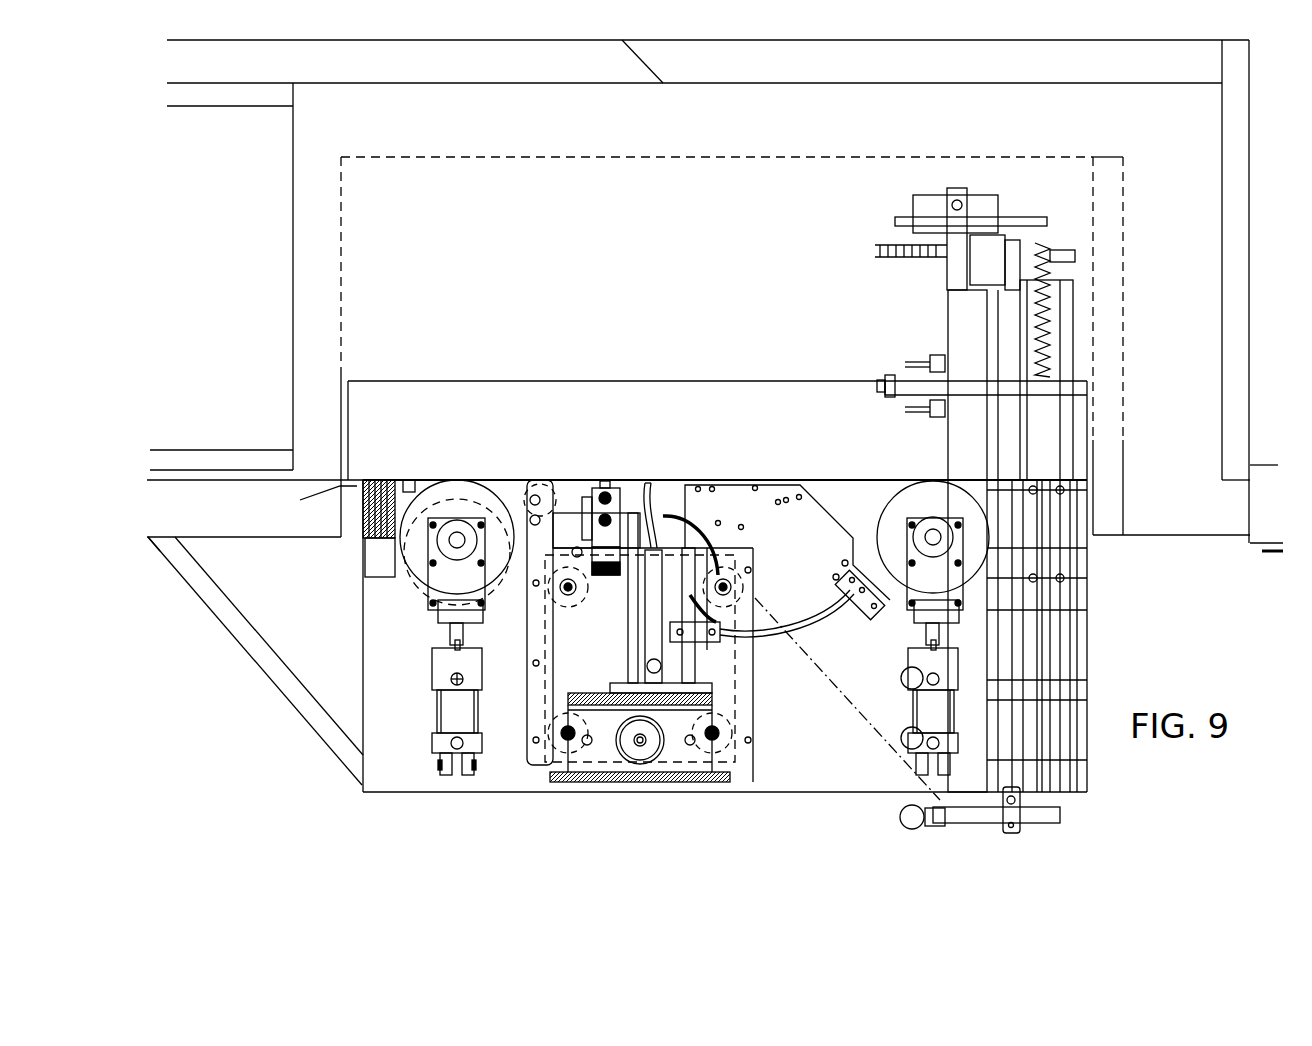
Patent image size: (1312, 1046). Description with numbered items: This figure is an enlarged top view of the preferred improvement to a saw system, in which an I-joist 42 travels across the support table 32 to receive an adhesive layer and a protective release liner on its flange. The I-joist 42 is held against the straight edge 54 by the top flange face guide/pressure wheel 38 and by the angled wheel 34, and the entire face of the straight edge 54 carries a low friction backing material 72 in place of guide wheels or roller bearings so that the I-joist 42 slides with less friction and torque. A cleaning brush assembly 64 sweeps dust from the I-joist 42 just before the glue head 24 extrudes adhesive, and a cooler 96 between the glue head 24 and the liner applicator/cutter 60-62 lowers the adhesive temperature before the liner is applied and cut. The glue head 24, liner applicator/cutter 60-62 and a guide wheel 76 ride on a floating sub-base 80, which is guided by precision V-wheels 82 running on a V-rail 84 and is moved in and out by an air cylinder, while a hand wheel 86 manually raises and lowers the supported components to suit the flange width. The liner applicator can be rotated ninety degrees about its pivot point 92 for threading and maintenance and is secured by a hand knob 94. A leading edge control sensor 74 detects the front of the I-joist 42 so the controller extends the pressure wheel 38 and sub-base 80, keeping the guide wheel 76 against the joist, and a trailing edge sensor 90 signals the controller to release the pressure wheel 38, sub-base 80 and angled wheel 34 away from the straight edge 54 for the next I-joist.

The low friction backing material 72 is at (790, 86).
The straight edge 54 is at (1177, 72).
The I-joist 42 is at (202, 427).
The cleaning brush assembly 64 is at (379, 477).
The leading edge control sensor 74 is at (408, 478).
The top flange face guide/pressure wheel 38 is at (463, 492).
The guide wheel 76 is at (541, 492).
The glue head 24 is at (615, 487).
The cooler 96 is at (658, 561).
The liner applicator/cutter 60-62 is at (738, 501).
The angled wheel 34 is at (900, 498).
The trailing edge sensor 90 is at (975, 480).
The hand knob 94 is at (872, 604).
The pivot point 92 is at (728, 639).
The precision V-wheels 82 is at (539, 753).
The V-rail 84 is at (573, 602).
The hand wheel 86 is at (652, 746).
The floating sub-base 80 is at (745, 775).
The support table 32 is at (848, 797).